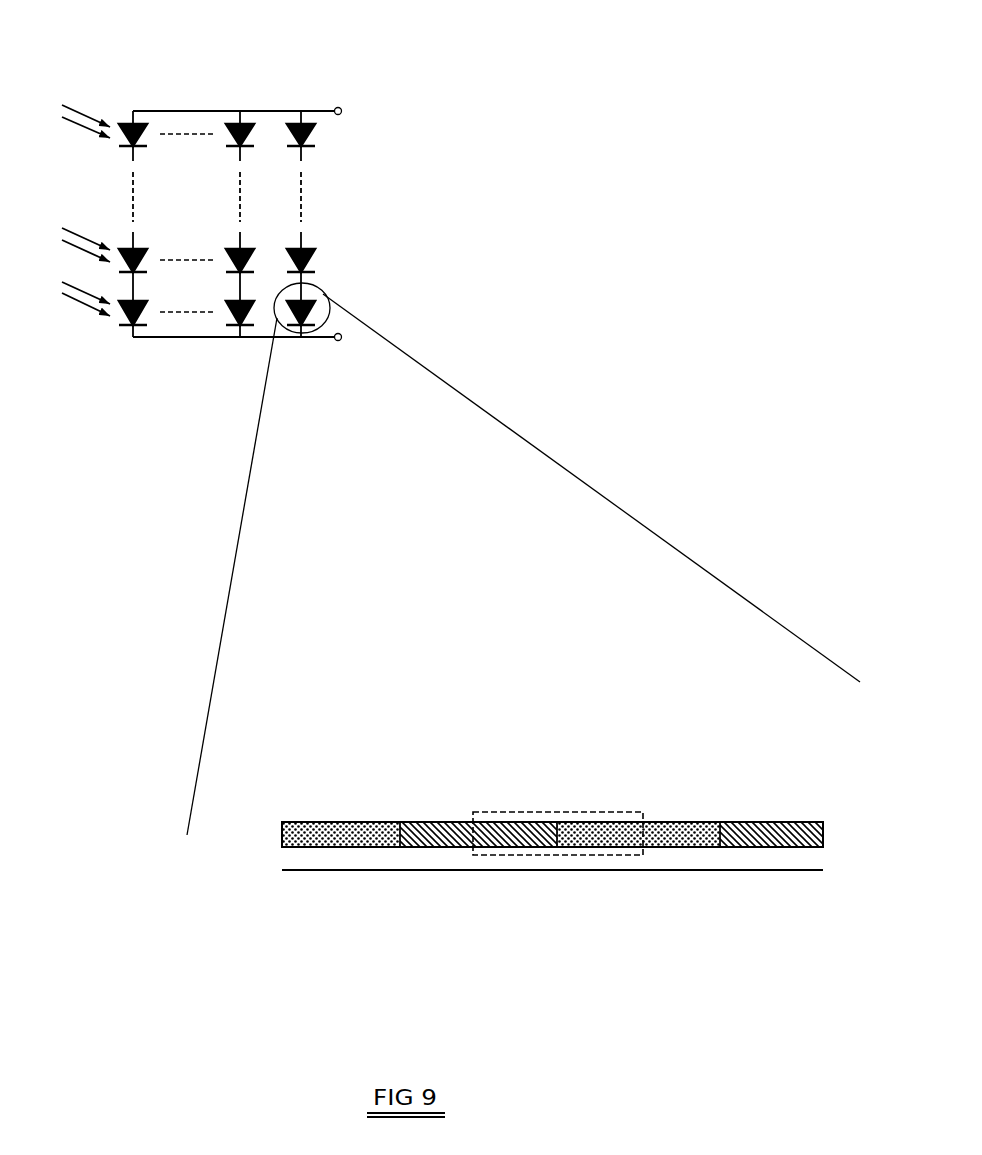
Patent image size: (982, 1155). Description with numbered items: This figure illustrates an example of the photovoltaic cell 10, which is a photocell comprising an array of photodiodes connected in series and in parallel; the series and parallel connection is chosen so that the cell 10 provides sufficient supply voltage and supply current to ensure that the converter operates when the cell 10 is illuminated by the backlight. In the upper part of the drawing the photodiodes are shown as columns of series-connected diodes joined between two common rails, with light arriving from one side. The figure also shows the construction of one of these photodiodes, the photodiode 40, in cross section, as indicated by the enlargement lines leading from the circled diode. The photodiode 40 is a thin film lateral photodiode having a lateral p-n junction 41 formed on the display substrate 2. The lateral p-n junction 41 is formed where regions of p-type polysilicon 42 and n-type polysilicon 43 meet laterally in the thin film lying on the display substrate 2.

The photovoltaic cell 10 is at (235, 111).
The photodiode 40 is at (320, 296).
The lateral p-n junction 41 is at (495, 855).
The p-type polysilicon region 42 is at (343, 822).
The n-type polysilicon region 43 is at (770, 822).
The display substrate 2 is at (637, 870).